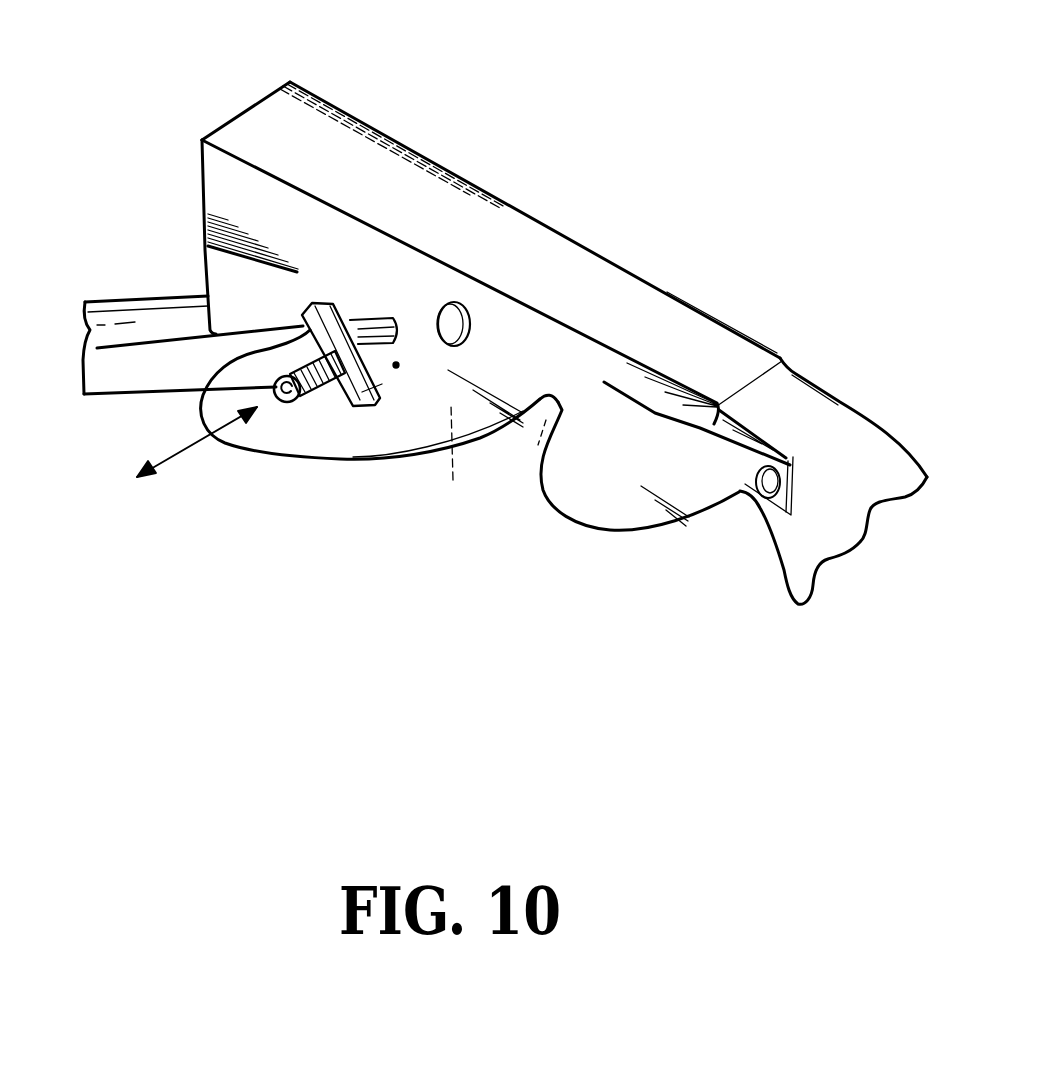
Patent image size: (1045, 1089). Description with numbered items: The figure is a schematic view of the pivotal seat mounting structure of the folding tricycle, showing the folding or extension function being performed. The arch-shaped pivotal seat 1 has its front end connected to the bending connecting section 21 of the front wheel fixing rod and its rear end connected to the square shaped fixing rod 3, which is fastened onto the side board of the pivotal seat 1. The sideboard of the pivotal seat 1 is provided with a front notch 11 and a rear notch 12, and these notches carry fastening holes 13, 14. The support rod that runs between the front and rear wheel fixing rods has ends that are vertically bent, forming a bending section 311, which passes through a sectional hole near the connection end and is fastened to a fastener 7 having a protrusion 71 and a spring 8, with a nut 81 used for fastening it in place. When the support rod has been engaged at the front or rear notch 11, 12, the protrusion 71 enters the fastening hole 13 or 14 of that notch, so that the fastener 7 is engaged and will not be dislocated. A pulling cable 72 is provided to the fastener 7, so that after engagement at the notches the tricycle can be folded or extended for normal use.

The pivotal seat 1 is at (484, 188).
The fixing rod 3 is at (157, 297).
The fastener 7 is at (379, 404).
The spring 8 is at (338, 400).
The front notch 11 is at (546, 425).
The rear notch 12 is at (387, 312).
The fastening hole 13 is at (362, 303).
The fastening hole 14 is at (528, 392).
The bending connecting section 21 is at (863, 434).
The protrusion 71 is at (353, 303).
The pulling cable 72 is at (250, 452).
The nut 81 is at (278, 384).
The bending section 311 is at (453, 480).